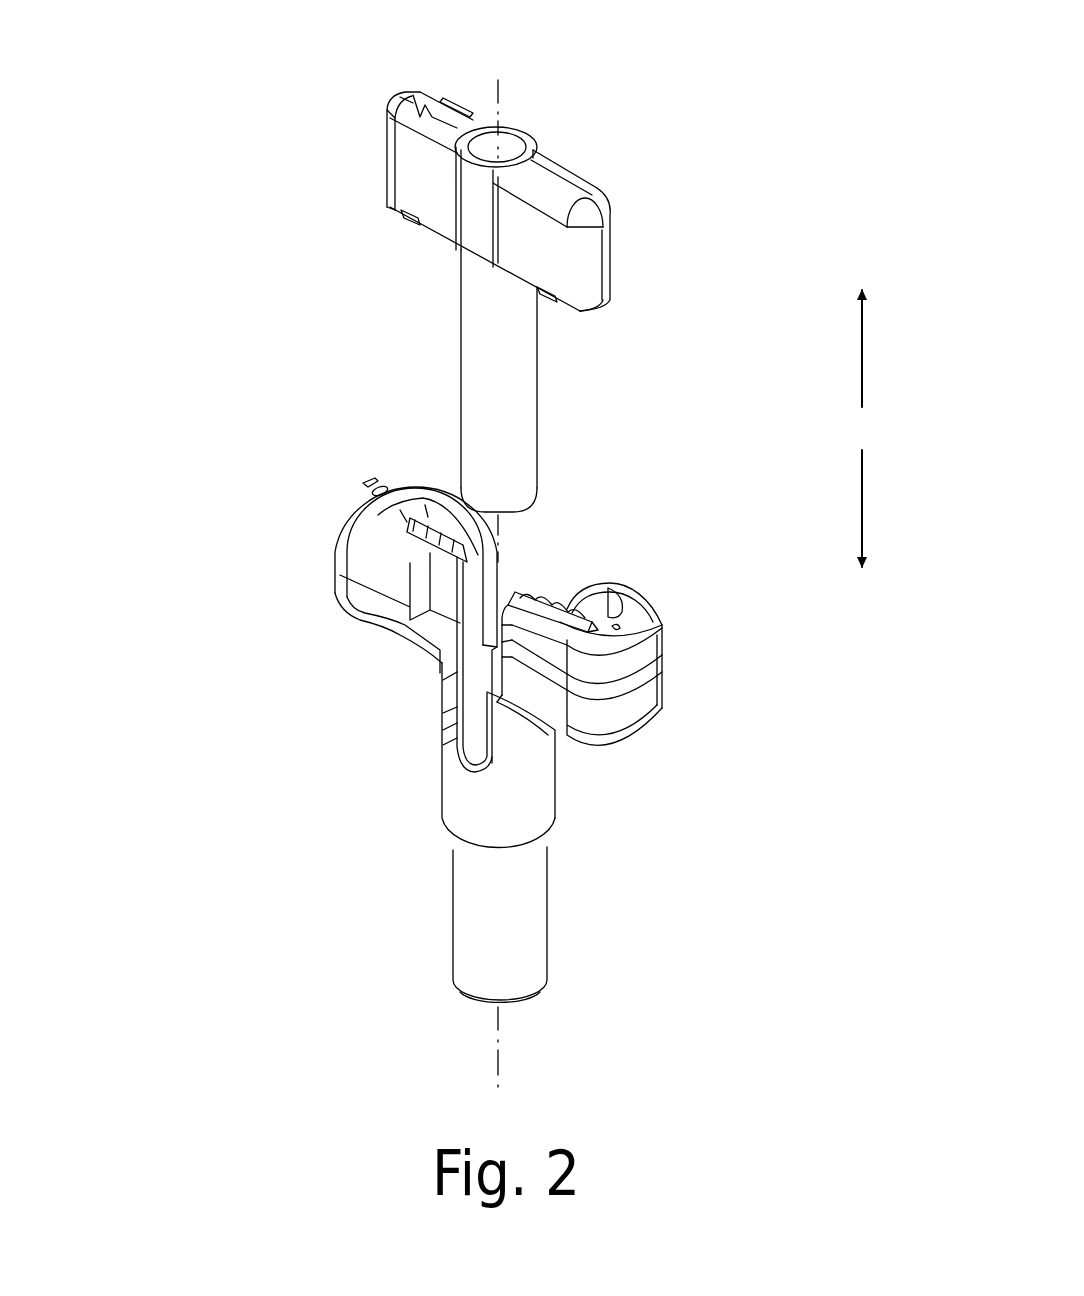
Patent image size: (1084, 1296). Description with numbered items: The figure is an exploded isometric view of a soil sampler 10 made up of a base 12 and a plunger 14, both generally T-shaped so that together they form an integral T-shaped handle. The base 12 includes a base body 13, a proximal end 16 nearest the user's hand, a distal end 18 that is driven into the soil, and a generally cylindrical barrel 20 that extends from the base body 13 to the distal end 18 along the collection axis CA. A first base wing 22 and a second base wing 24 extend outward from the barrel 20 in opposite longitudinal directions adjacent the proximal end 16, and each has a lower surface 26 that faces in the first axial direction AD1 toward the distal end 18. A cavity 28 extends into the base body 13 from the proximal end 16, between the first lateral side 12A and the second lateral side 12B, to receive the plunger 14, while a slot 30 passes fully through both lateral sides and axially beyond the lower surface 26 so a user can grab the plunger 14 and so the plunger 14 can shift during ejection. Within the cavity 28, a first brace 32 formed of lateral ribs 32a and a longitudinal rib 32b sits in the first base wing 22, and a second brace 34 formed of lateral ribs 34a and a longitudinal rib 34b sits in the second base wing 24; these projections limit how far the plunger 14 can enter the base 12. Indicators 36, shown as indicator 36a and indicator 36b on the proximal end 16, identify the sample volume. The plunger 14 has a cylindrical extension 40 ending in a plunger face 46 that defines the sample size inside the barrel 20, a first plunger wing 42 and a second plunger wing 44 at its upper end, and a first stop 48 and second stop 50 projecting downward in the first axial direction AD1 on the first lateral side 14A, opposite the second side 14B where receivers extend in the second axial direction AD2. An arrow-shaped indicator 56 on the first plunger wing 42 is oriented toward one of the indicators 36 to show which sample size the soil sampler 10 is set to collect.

The soil sampler 10 is at (148, 142).
The base 12 is at (420, 795).
The first lateral side 12A is at (362, 563).
The second lateral side 12B is at (635, 596).
The base body 13 is at (558, 712).
The plunger 14 is at (620, 192).
The first lateral side of plunger 14A is at (433, 183).
The second side of plunger 14B is at (577, 170).
The proximal end 16 is at (652, 623).
The distal end 18 is at (490, 1003).
The barrel 20 is at (523, 887).
The first base wing 22 is at (600, 657).
The second base wing 24 is at (348, 507).
The lower surface 26 is at (393, 635).
The cavity 28 is at (413, 497).
The slot 30 is at (443, 689).
The first brace 32 is at (543, 600).
The lateral ribs 32a is at (552, 628).
The longitudinal rib 32b is at (568, 608).
The second brace 34 is at (417, 563).
The lateral ribs 34a is at (413, 558).
The longitudinal rib 34b is at (417, 535).
The indicators 36 is at (638, 610).
The indicator 36a is at (618, 624).
The indicator 36b is at (376, 490).
The extension 40 is at (480, 332).
The first plunger wing 42 is at (410, 118).
The second plunger wing 44 is at (585, 214).
The plunger face 46 is at (541, 493).
The first stop 48 is at (403, 223).
The second stop 50 is at (553, 300).
The indicator 56 is at (447, 103).
The first axial direction AD1 is at (862, 492).
The second axial direction AD2 is at (862, 345).
The collection axis CA is at (500, 1050).